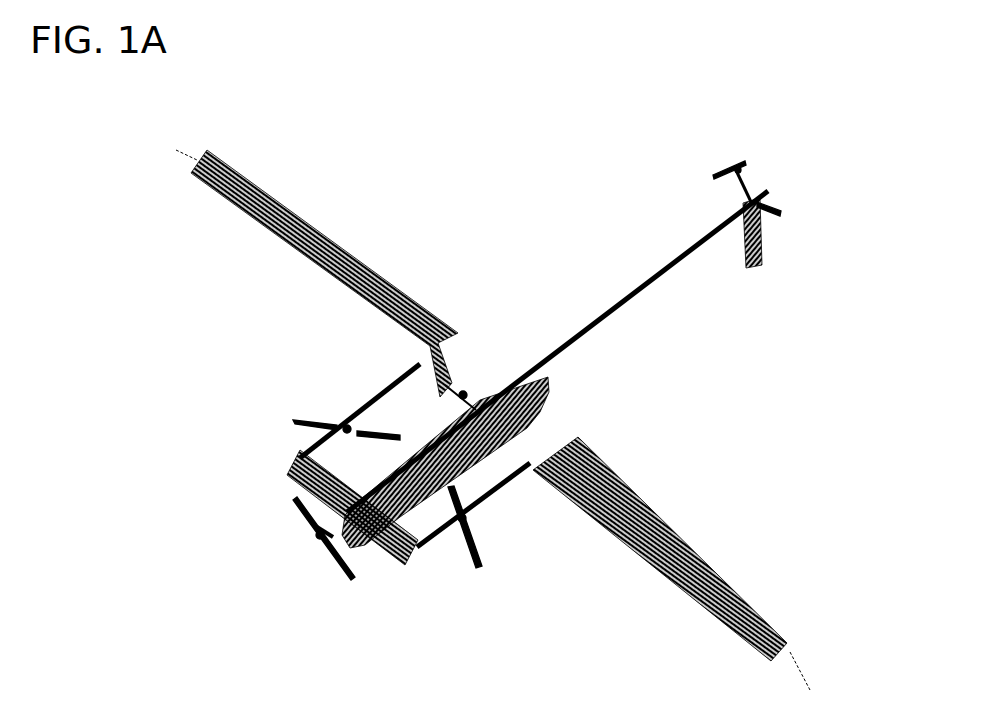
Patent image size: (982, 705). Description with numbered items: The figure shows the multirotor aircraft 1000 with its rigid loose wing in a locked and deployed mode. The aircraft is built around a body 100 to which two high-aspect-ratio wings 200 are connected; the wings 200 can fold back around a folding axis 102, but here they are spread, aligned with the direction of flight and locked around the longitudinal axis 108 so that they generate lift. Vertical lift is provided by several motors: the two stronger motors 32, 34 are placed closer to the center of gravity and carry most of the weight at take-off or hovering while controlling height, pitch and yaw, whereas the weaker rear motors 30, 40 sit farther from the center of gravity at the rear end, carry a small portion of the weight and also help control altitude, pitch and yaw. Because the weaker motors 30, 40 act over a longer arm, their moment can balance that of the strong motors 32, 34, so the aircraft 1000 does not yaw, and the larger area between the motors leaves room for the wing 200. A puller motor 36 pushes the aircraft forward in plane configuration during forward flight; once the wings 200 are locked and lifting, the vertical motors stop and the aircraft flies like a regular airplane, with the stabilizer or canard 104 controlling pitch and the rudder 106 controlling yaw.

The multirotor aircraft 1000 is at (521, 389).
The body 100 is at (379, 379).
The folding axis 102 is at (528, 466).
The canard 104 is at (301, 470).
The rudder 106 is at (762, 262).
The longitudinal axis 108 is at (197, 132).
The wing 200 is at (609, 469).
The rear motor 30 is at (746, 168).
The strong motor 32 is at (334, 425).
The strong motor 34 is at (463, 537).
The puller motor 36 is at (317, 542).
The rear motor 40 is at (781, 213).